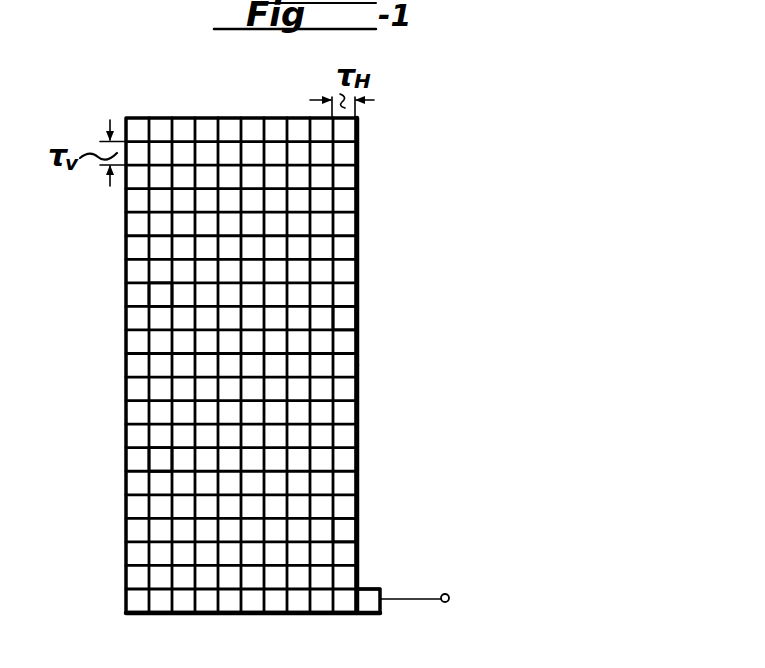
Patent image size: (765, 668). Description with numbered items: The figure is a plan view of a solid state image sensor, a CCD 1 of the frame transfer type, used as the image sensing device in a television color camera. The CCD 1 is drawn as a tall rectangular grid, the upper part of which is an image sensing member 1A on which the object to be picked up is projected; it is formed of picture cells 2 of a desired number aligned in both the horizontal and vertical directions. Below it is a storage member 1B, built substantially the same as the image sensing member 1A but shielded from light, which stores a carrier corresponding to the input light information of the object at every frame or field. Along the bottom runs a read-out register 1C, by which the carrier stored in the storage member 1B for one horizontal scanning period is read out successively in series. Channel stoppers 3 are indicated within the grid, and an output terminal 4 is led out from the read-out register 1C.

The CCD 1 is at (248, 365).
The image sensing member 1A is at (360, 271).
The storage member 1B is at (360, 481).
The read-out register 1C is at (258, 618).
The picture cells 2 is at (139, 131).
The channel stoppers 3 is at (173, 294).
The output terminal 4 is at (445, 602).